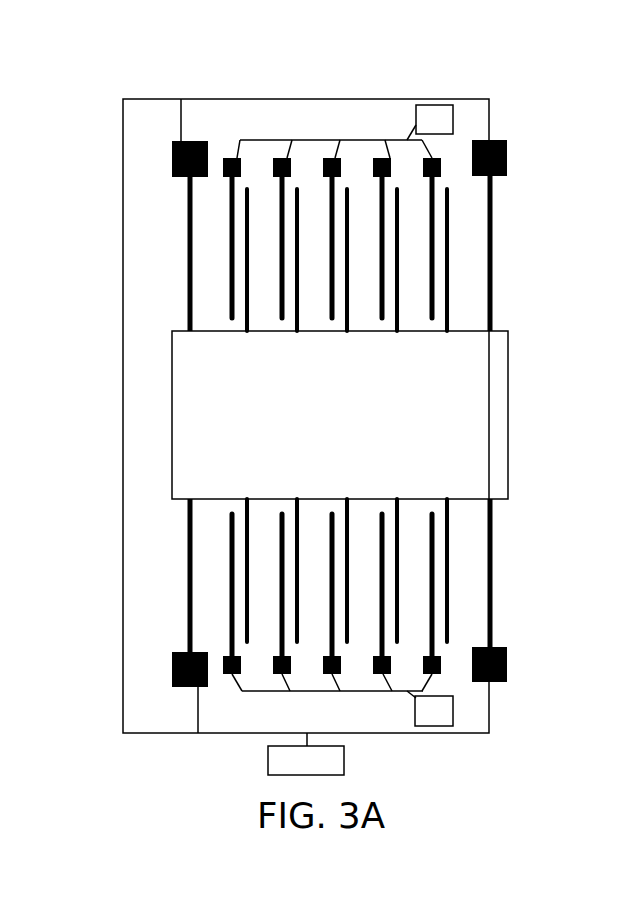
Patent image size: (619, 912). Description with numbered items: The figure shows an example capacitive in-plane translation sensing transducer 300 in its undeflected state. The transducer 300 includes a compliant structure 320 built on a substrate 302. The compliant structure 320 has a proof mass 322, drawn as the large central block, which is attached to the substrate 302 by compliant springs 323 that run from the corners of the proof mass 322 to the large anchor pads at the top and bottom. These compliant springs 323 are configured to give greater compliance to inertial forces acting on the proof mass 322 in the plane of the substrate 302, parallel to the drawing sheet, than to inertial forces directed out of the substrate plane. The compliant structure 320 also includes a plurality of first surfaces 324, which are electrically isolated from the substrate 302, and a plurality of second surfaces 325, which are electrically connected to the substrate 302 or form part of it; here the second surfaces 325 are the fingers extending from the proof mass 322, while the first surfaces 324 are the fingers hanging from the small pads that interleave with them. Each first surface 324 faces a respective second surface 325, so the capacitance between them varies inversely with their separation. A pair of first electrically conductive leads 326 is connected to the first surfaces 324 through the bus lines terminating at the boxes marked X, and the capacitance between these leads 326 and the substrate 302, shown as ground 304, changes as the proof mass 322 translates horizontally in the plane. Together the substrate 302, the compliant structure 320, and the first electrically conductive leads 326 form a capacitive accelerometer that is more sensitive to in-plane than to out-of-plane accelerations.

The capacitive in-plane translation sensing transducer 300 is at (533, 112).
The substrate 302 is at (572, 173).
The ground 304 is at (230, 733).
The compliant structure 320 is at (530, 335).
The proof mass 322 is at (317, 427).
The compliant springs 323 is at (187, 303).
The first surfaces 324 is at (236, 182).
The second surfaces 325 is at (347, 270).
The first electrically conductive leads 326 is at (372, 140).